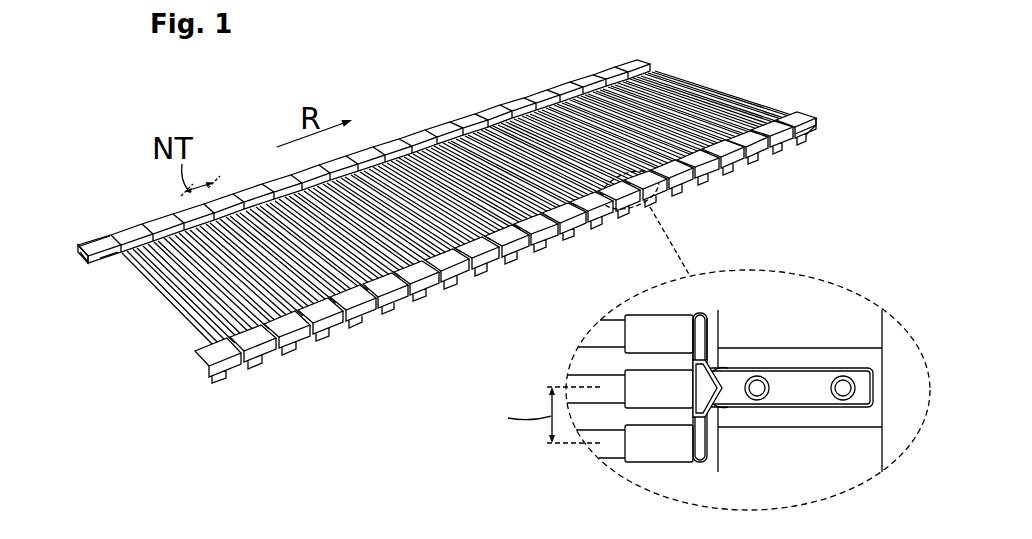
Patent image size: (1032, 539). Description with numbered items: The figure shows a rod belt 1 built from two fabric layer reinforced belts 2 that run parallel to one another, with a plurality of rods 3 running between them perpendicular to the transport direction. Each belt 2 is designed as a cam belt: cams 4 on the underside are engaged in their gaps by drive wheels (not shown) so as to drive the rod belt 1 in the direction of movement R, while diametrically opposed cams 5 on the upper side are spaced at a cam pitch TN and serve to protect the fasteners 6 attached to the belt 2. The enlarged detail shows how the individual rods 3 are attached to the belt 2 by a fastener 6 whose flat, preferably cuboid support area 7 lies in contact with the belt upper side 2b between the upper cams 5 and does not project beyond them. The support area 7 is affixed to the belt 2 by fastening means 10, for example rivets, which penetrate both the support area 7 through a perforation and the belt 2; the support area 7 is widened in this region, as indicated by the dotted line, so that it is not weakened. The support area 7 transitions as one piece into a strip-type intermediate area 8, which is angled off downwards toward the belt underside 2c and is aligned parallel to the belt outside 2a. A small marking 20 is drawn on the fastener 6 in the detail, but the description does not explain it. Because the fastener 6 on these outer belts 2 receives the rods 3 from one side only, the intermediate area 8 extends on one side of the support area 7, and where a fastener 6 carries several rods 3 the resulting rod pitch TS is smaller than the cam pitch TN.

The rod belt 1 is at (438, 95).
The belt 2 is at (92, 254).
The belt outside 2a is at (108, 266).
The belt upper side 2b is at (90, 242).
The belt underside 2c is at (100, 262).
The rods 3 is at (214, 346).
The cams on the underside 4 is at (814, 127).
The cams on the upper side 5 is at (132, 236).
The fastener 6 is at (704, 463).
The support area 7 is at (790, 396).
The intermediate area 8 is at (702, 342).
The fastening means 10 is at (840, 385).
The marking arrow 20 is at (707, 388).